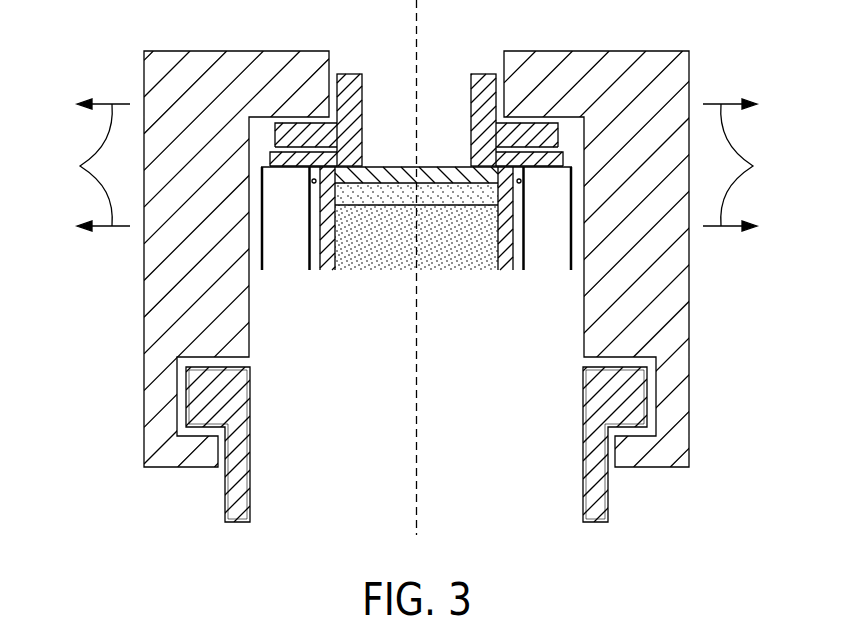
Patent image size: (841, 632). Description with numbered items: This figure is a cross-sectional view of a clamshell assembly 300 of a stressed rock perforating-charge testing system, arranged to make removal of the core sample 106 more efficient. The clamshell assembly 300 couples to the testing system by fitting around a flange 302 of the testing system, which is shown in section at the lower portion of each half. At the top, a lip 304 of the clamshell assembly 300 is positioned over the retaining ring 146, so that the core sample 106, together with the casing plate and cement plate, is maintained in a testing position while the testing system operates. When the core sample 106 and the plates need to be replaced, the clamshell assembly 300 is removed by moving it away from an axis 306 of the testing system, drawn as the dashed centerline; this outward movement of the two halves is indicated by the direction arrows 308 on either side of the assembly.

The clamshell assembly 300 is at (442, 239).
The flange 302 is at (633, 400).
The lip 304 is at (535, 72).
The axis 306 is at (417, 39).
The direction arrows 308 is at (416, 165).
The retaining ring 146 is at (343, 85).
The core sample 106 is at (460, 255).